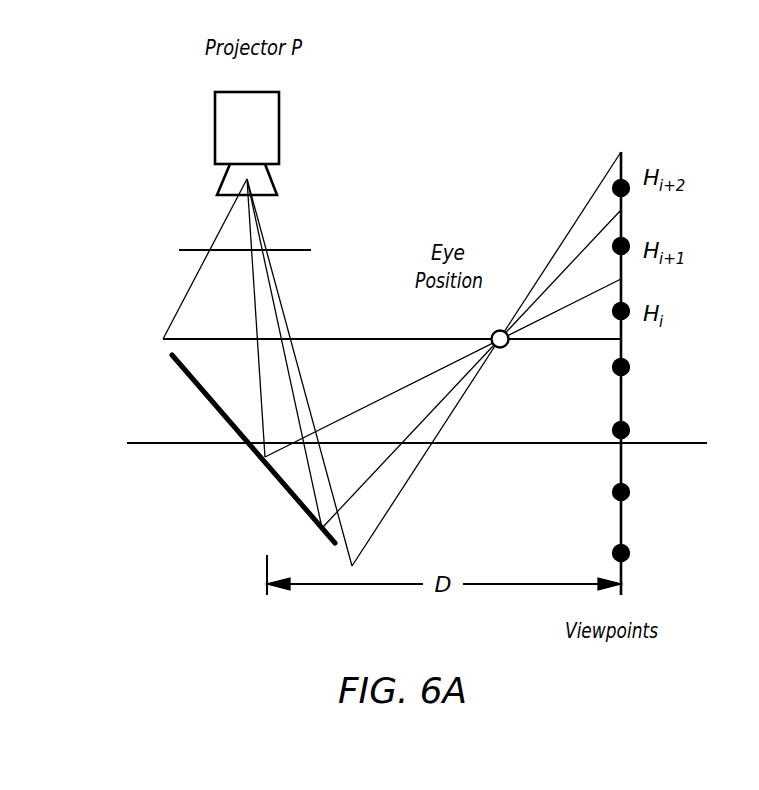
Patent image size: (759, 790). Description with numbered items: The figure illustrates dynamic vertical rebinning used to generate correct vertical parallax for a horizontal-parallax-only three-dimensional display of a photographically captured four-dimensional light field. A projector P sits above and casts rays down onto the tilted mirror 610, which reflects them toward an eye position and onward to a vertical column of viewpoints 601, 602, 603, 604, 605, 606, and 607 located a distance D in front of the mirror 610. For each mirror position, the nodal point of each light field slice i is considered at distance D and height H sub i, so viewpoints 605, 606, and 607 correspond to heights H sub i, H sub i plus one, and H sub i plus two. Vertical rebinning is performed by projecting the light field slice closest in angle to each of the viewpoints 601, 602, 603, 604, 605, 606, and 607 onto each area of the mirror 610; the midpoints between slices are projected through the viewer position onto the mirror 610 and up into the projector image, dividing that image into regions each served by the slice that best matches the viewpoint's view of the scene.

The viewpoint 601 is at (627, 549).
The viewpoint 602 is at (627, 488).
The viewpoint 603 is at (627, 427).
The viewpoint 604 is at (627, 363).
The viewpoint 605 is at (627, 307).
The viewpoint 606 is at (627, 242).
The viewpoint 607 is at (623, 178).
The mirror 610 is at (287, 491).